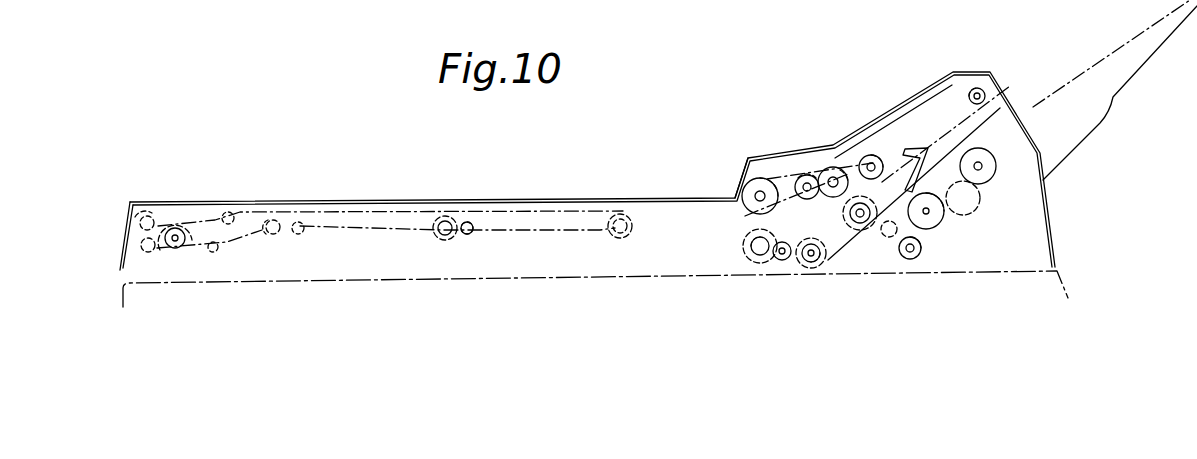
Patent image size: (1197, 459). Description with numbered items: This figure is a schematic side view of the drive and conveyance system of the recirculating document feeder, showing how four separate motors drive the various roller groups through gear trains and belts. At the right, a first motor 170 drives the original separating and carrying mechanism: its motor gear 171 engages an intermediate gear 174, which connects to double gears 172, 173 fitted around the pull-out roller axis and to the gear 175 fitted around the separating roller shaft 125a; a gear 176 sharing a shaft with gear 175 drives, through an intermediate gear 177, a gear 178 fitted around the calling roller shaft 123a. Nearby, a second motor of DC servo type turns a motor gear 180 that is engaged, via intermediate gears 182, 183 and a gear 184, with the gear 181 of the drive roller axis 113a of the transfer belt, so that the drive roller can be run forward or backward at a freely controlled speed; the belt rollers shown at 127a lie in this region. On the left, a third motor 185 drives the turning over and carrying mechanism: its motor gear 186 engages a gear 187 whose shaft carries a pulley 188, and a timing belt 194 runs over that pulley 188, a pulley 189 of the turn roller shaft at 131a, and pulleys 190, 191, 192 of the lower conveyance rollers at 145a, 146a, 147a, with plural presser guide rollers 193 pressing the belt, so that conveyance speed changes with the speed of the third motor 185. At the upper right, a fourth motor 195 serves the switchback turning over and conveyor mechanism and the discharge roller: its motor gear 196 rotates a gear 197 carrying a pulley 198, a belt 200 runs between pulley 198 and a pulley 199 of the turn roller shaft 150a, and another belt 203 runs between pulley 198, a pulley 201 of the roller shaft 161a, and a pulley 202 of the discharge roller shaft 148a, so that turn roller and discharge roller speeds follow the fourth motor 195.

The drive roller axis 113a is at (806, 261).
The calling roller shaft 123a is at (1033, 133).
The separating roller shaft 125a is at (925, 252).
The guide line 127a is at (861, 232).
The roller shaft 131a is at (175, 248).
The roller 145a is at (277, 224).
The roller 146a is at (456, 226).
The roller 147a is at (630, 216).
The discharge roller shaft 148a is at (978, 88).
The turn roller shaft 150a is at (747, 196).
The roller shaft 161a is at (872, 160).
The first motor 170 is at (745, 245).
The motor gear 171 is at (912, 272).
The double gear 172 is at (887, 238).
The double gear 173 is at (846, 215).
The intermediate gear 174 is at (896, 208).
The gear 175 is at (930, 214).
The gear 176 is at (933, 222).
The intermediate gear 177 is at (982, 203).
The gear 178 is at (978, 148).
The motor gear 180 is at (762, 252).
The gear 181 is at (810, 265).
The intermediate gear 182 is at (784, 262).
The intermediate gear 183 is at (777, 256).
The gear 184 is at (823, 257).
The third motor 185 is at (140, 257).
The motor gear 186 is at (143, 247).
The gear 187 is at (138, 217).
The pulley 188 is at (142, 220).
The pulley 189 is at (176, 222).
The pulley 190 is at (262, 222).
The pulley 191 is at (440, 222).
The pulley 192 is at (606, 218).
The presser guide roller 193 is at (223, 215).
The timing belt 194 is at (357, 208).
The fourth motor 195 is at (849, 177).
The motor gear 196 is at (833, 180).
The gear 197 is at (797, 183).
The pulley 198 is at (810, 177).
The pulley 199 is at (733, 198).
The belt 200 is at (767, 187).
The pulley 201 is at (885, 163).
The pulley 202 is at (967, 96).
The belt 203 is at (930, 112).